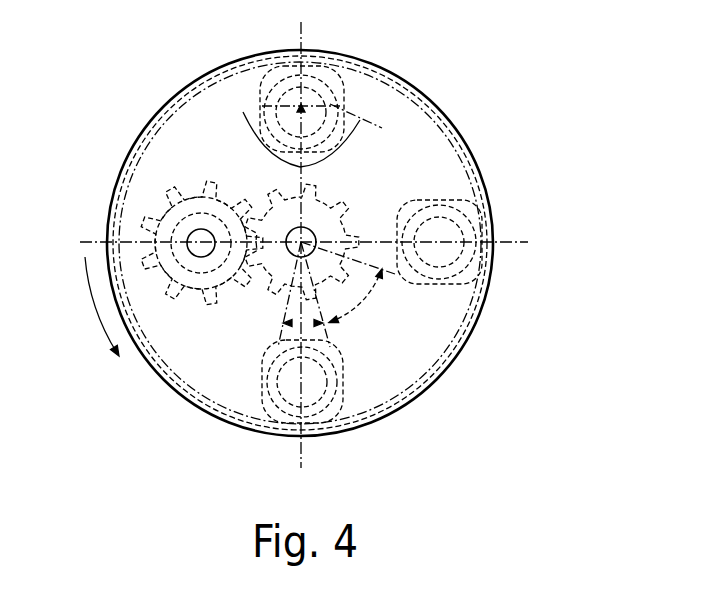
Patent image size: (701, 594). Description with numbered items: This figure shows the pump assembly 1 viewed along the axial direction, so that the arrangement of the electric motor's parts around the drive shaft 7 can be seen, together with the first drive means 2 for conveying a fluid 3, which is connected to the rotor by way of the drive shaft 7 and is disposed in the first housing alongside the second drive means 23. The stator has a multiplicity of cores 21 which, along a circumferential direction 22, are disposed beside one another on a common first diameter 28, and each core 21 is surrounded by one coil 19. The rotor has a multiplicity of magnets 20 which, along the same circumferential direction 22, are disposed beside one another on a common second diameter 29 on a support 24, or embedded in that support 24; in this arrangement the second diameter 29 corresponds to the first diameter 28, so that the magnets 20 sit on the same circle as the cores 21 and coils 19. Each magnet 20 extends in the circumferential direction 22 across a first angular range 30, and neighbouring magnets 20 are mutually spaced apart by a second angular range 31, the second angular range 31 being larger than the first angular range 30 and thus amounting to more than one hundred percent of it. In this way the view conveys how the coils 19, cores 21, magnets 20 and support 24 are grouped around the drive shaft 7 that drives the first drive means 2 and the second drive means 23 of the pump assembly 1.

The pump assembly 1 is at (498, 168).
The first drive means 2 is at (287, 300).
The fluid 3 is at (246, 246).
The drive shaft 7 is at (310, 226).
The coil 19 is at (450, 265).
The magnets 20 is at (344, 408).
The cores 21 is at (457, 232).
The circumferential direction 22 is at (87, 306).
The second drive means 23 is at (195, 195).
The support 24 is at (408, 372).
The first diameter 28 is at (243, 112).
The second diameter 29 is at (360, 120).
The first angular range 30 is at (300, 333).
The second angular range 31 is at (365, 296).